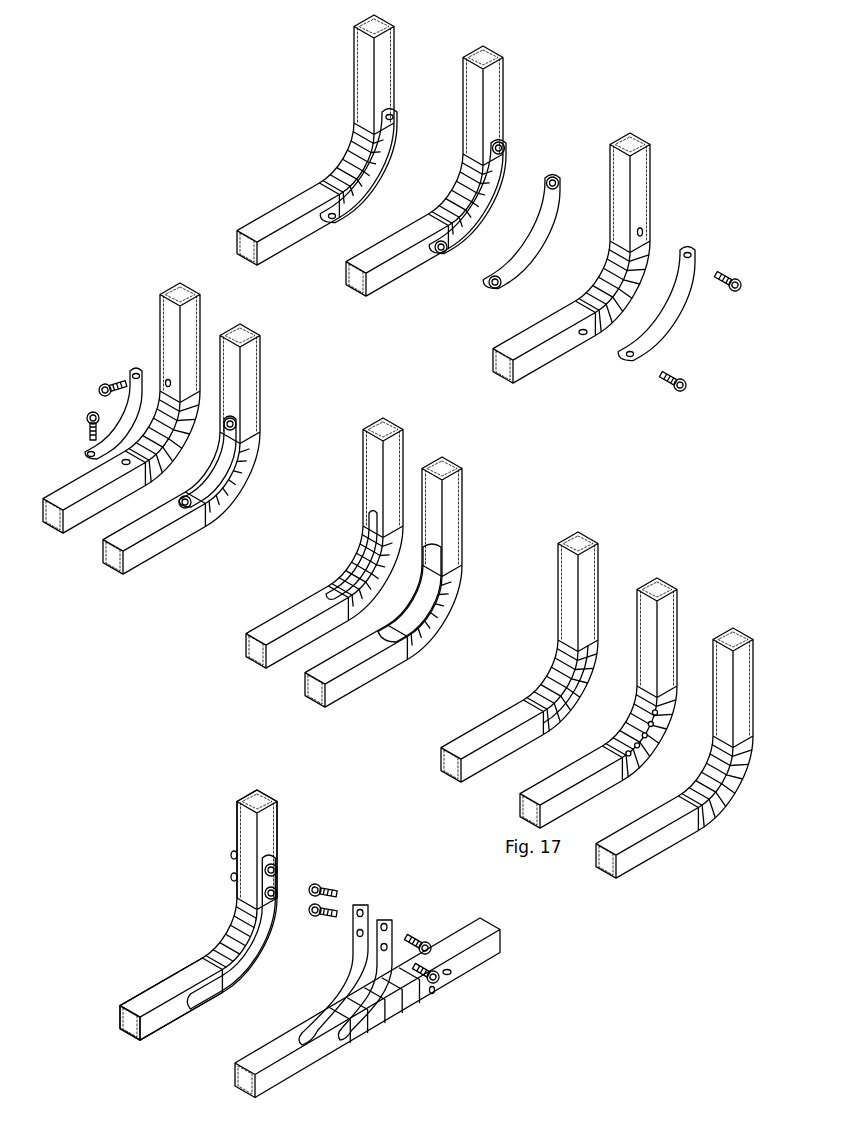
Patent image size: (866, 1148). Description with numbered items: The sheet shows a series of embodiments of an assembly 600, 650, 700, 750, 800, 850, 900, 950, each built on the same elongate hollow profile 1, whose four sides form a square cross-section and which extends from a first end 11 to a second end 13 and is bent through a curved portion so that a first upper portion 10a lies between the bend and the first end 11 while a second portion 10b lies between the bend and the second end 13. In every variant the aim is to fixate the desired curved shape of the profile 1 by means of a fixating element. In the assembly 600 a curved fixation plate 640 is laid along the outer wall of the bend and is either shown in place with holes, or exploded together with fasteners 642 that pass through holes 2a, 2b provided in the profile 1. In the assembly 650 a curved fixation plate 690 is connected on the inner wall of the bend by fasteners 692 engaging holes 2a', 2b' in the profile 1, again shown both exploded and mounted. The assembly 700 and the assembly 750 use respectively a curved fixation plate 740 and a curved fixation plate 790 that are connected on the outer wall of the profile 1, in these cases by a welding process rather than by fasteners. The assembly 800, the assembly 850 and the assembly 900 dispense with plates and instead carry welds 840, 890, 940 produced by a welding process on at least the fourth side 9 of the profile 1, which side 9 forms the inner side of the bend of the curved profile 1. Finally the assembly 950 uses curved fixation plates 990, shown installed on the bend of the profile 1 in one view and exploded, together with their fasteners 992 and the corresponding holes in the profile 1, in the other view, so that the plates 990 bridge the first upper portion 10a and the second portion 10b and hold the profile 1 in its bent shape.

In FIG. 12A, the elongate hollow profile 1 is at (293, 210).
In FIG. 12B, the elongate hollow profile 1 is at (391, 250).
In FIG. 12C, the elongate hollow profile 1 is at (522, 342).
In FIG. 13A, the elongate hollow profile 1 is at (70, 493).
In FIG. 13B, the elongate hollow profile 1 is at (148, 548).
In FIG. 14, the elongate hollow profile 1 is at (270, 625).
In FIG. 15, the elongate hollow profile 1 is at (347, 667).
In FIG. 16, the elongate hollow profile 1 is at (483, 738).
In FIG. 17, the elongate hollow profile 1 is at (568, 790).
In FIG. 18, the elongate hollow profile 1 is at (632, 838).
In FIG. 19A, the elongate hollow profile 1 is at (158, 998).
In FIG. 19B, the elongate hollow profile 1 is at (490, 948).
In FIG. 12A, the assembly 600 is at (306, 117).
In FIG. 12B, the assembly 600 is at (532, 107).
In FIG. 12C, the assembly 600 is at (716, 147).
In FIG. 12B, the curved fixation plate 640 is at (486, 211).
In FIG. 12C, the curved fixation plate 640 is at (672, 322).
In FIG. 12C, the fastener 642 is at (733, 273).
In FIG. 12C, the hole 2a is at (670, 226).
In FIG. 12C, the hole 2b is at (582, 357).
In FIG. 13A, the assembly 650 is at (123, 336).
In FIG. 13B, the assembly 650 is at (281, 397).
In FIG. 13A, the curved fixation plate 690 is at (120, 417).
In FIG. 13B, the curved fixation plate 690 is at (220, 473).
In FIG. 13A, the fastener 692 is at (86, 422).
In FIG. 13A, the hole 2a' is at (154, 321).
In FIG. 13A, the hole 2b' is at (142, 488).
In FIG. 14, the assembly 700 is at (353, 466).
In FIG. 14, the curved fixation plate 740 is at (337, 590).
In FIG. 15, the assembly 750 is at (489, 501).
In FIG. 15, the curved fixation plate 790 is at (440, 620).
In FIG. 16, the assembly 800 is at (544, 604).
In FIG. 16, the weld 840 is at (537, 700).
In FIG. 16, the fourth side 9 is at (572, 622).
In FIG. 17, the fourth side 9 is at (647, 658).
In FIG. 18, the fourth side 9 is at (688, 807).
In FIG. 18, the assembly 850 is at (697, 621).
In FIG. 17, the weld 890 is at (635, 705).
In FIG. 18, the assembly 900 is at (729, 850).
In FIG. 18, the weld 940 is at (690, 792).
In FIG. 19A, the assembly 950 is at (204, 841).
In FIG. 19B, the assembly 950 is at (472, 999).
In FIG. 19A, the first end 11 is at (270, 795).
In FIG. 19A, the first upper portion 10a is at (270, 837).
In FIG. 19A, the second portion 10b is at (163, 1020).
In FIG. 19A, the second end 13 is at (137, 1033).
In FIG. 19A, the curved fixation plate 990 is at (240, 972).
In FIG. 19B, the curved fixation plate 990 is at (353, 978).
In FIG. 19B, the fastener 992 is at (333, 885).